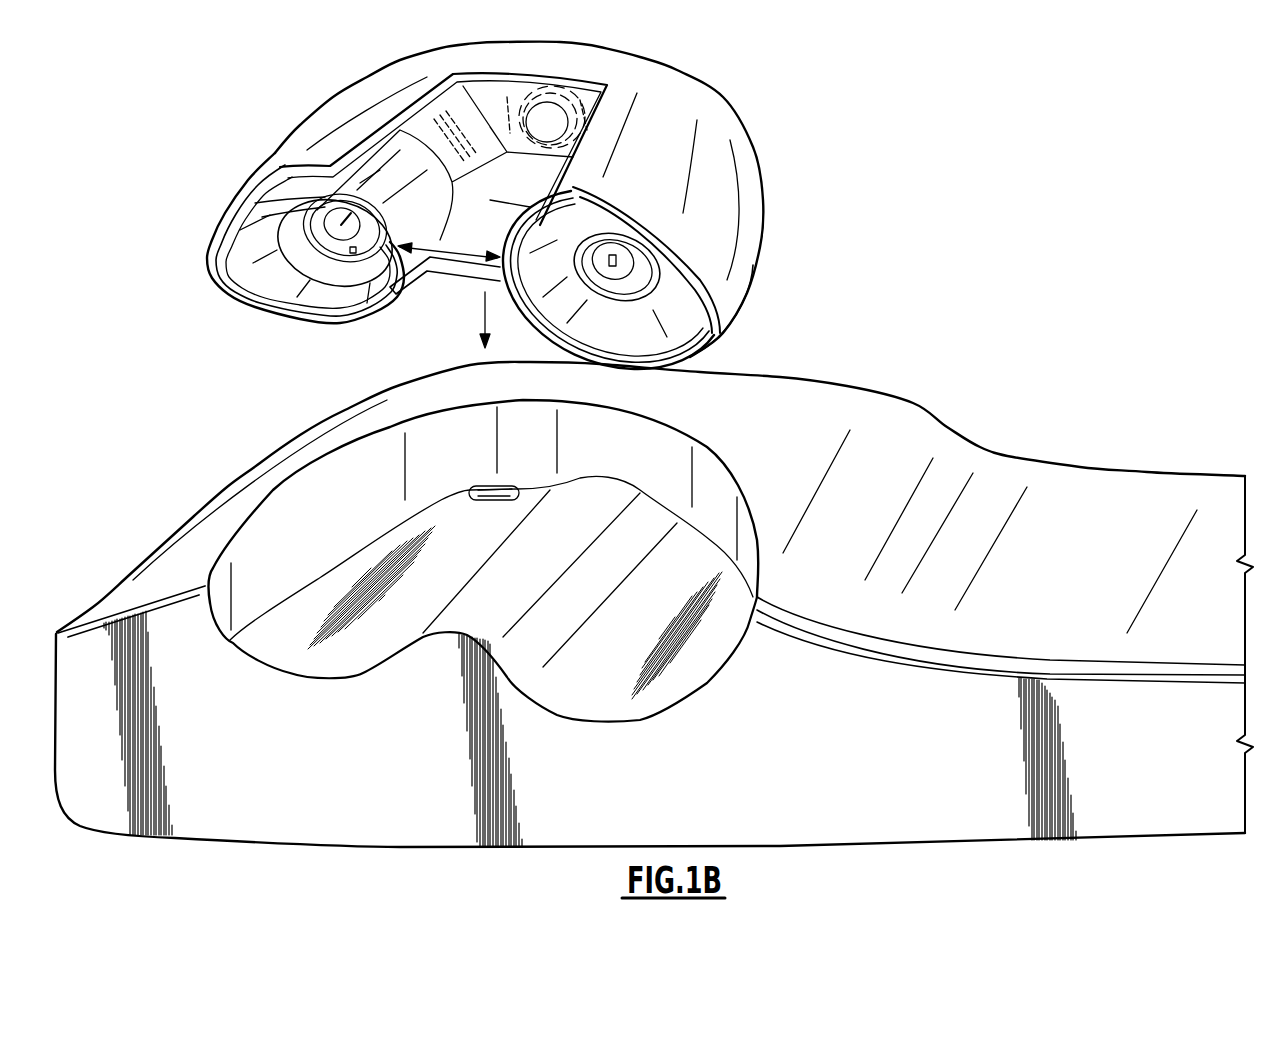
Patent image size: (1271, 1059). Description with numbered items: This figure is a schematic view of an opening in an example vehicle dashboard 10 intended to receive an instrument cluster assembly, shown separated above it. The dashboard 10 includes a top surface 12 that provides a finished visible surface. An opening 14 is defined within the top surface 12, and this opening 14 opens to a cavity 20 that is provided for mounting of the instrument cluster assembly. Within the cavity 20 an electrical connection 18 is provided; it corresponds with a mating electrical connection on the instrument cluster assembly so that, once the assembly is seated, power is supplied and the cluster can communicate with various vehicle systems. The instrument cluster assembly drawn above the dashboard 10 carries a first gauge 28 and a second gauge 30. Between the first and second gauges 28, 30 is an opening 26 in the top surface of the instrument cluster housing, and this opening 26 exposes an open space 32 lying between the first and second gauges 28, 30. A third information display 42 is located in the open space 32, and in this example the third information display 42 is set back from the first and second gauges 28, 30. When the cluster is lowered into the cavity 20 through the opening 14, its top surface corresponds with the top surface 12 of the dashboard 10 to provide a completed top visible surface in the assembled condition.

The vehicle dashboard 10 is at (1112, 430).
The top surface 12 is at (868, 452).
The opening 14 is at (722, 438).
The electrical connection 18 is at (483, 473).
The cavity 20 is at (600, 583).
The opening 26 is at (605, 63).
The first gauge 28 is at (313, 260).
The second gauge 30 is at (603, 293).
The open space 32 is at (457, 260).
The third information display 42 is at (512, 167).